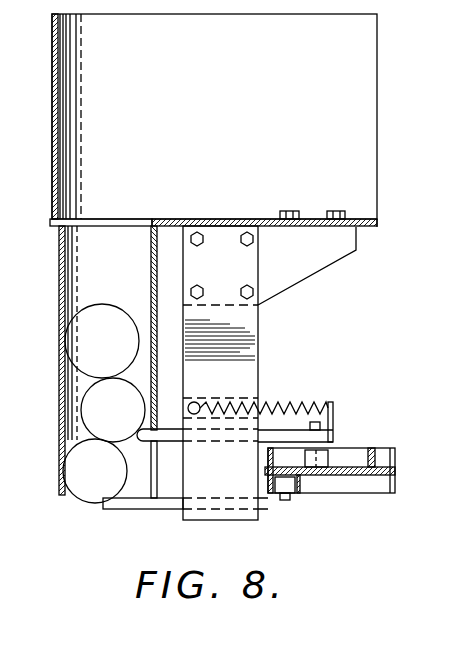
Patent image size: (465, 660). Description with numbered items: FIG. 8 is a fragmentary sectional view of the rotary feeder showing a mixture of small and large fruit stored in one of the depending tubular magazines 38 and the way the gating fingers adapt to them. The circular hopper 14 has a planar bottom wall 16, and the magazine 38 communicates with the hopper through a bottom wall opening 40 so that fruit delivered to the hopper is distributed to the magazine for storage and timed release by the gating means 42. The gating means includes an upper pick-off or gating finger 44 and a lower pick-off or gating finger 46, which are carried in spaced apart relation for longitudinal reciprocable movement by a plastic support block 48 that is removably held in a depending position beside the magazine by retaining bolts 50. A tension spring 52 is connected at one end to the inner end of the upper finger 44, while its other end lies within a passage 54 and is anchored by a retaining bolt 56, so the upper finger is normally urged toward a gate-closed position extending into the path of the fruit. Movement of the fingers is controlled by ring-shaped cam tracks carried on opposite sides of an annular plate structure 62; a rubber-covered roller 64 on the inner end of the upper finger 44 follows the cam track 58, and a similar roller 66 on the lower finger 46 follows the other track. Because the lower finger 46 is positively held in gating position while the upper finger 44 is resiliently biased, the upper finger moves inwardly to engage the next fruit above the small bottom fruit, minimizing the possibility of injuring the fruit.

The circular hopper 14 is at (52, 132).
The planar bottom wall 16 is at (207, 222).
The tubular magazine 38 is at (60, 392).
The bottom wall opening 40 is at (147, 222).
The gating means 42 is at (203, 532).
The upper gating finger 44 is at (163, 430).
The lower gating finger 46 is at (128, 508).
The support block 48 is at (244, 324).
The retaining bolts 50 is at (337, 211).
The tension spring 52 is at (285, 408).
The passage 54 is at (256, 400).
The retaining bolt 56 is at (200, 406).
The cam track 58 is at (380, 452).
The annular plate structure 62 is at (395, 478).
The roller 64 is at (312, 452).
The roller 66 is at (303, 497).